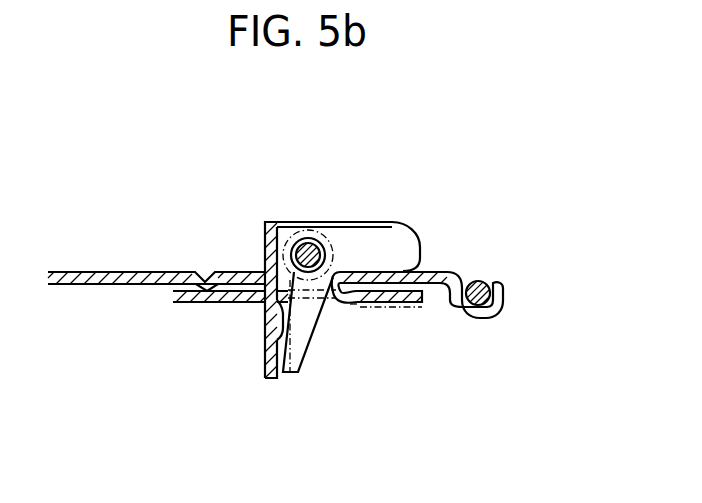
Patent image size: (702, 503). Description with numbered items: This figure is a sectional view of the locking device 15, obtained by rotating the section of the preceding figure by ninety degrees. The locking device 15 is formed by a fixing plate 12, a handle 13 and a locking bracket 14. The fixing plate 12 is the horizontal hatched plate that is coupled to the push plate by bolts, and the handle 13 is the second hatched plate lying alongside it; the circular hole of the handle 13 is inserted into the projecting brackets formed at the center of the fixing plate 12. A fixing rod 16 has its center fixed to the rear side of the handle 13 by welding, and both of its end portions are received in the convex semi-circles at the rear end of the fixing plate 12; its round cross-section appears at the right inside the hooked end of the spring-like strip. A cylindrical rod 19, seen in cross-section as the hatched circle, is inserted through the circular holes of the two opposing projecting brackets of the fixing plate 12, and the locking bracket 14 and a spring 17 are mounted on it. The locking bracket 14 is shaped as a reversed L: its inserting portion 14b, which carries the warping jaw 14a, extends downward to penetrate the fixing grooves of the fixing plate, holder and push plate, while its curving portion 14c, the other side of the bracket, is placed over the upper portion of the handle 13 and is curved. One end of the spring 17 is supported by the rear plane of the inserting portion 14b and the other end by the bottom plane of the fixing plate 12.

The fixing plate 12 is at (191, 303).
The handle 13 is at (115, 272).
The locking bracket 14 is at (319, 298).
The warping jaw 14a is at (274, 322).
The inserting portion 14b is at (281, 380).
The curving portion 14c is at (412, 248).
The locking device 15 is at (229, 229).
The fixing rod 16 is at (477, 280).
The spring 17 is at (355, 304).
The cylindrical rod 19 is at (306, 244).